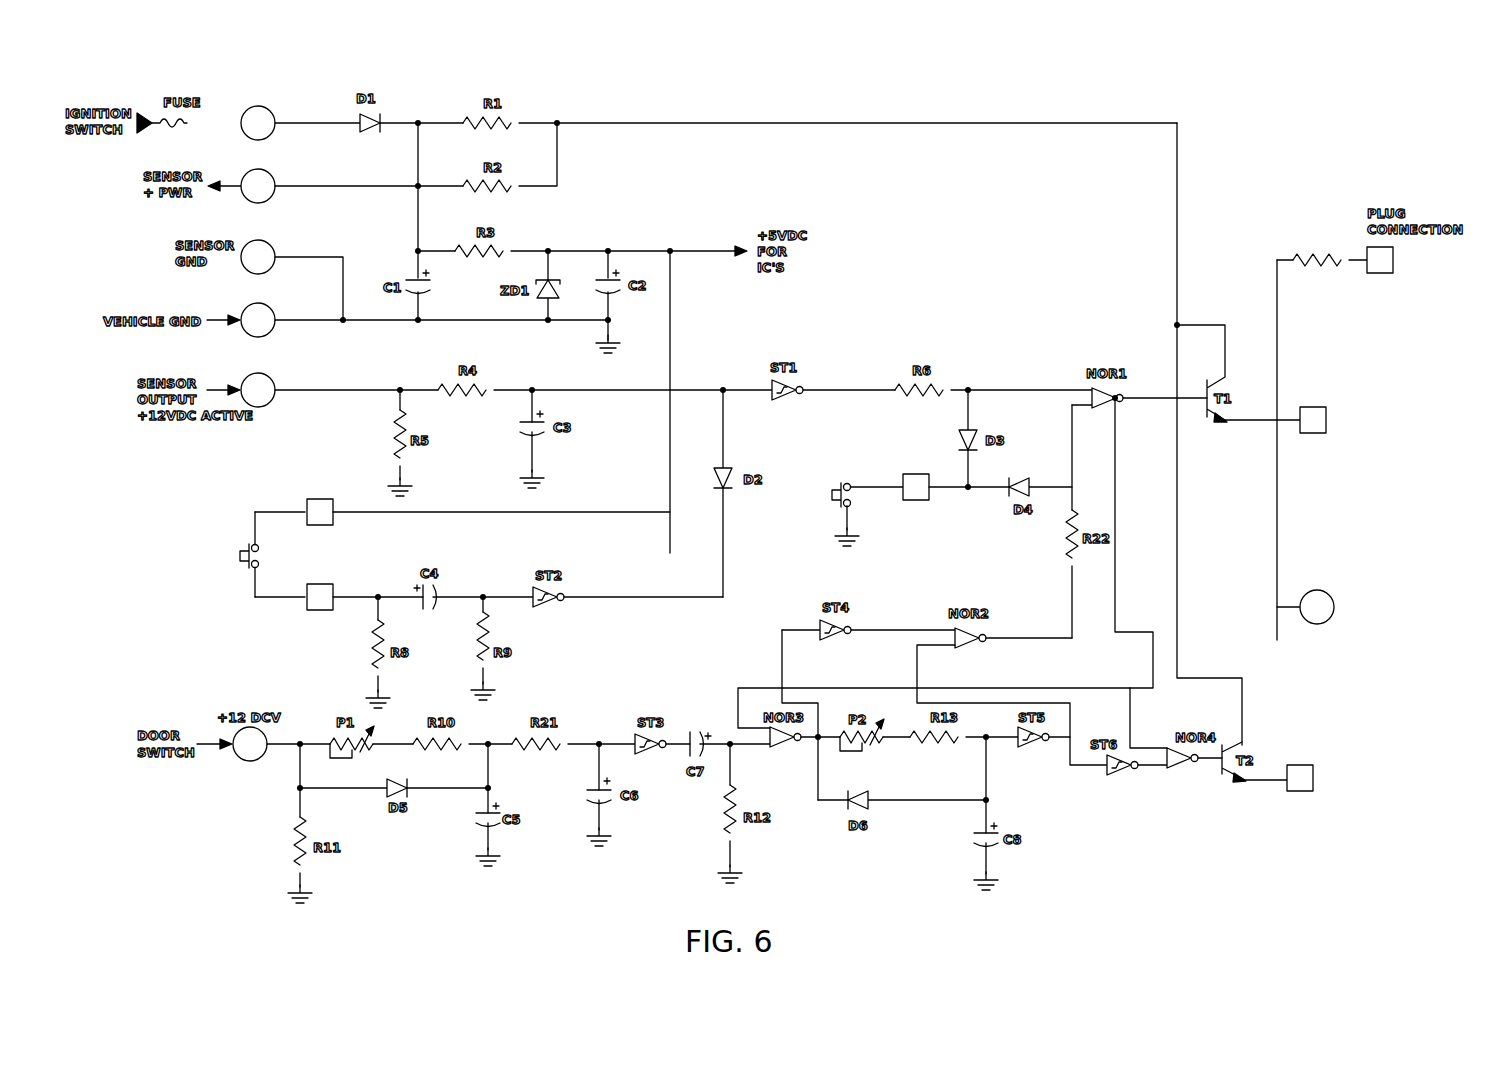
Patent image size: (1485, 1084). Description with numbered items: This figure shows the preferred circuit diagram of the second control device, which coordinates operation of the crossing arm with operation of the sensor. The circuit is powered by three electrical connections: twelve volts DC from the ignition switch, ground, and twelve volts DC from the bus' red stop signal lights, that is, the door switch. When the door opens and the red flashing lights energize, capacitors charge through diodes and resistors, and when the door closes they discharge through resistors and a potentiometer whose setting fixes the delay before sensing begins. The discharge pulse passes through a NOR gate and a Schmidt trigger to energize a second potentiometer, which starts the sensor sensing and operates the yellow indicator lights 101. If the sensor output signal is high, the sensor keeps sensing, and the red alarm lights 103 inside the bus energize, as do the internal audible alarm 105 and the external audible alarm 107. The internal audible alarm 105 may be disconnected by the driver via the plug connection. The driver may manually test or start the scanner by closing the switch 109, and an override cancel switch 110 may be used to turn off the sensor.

The yellow indicator lights 101 is at (1316, 778).
The red alarm lights 103 is at (1330, 420).
The internal audible alarm 105 is at (1351, 253).
The external audible alarm 107 is at (1321, 607).
The switch 109 is at (825, 514).
The override cancel switch 110 is at (229, 556).